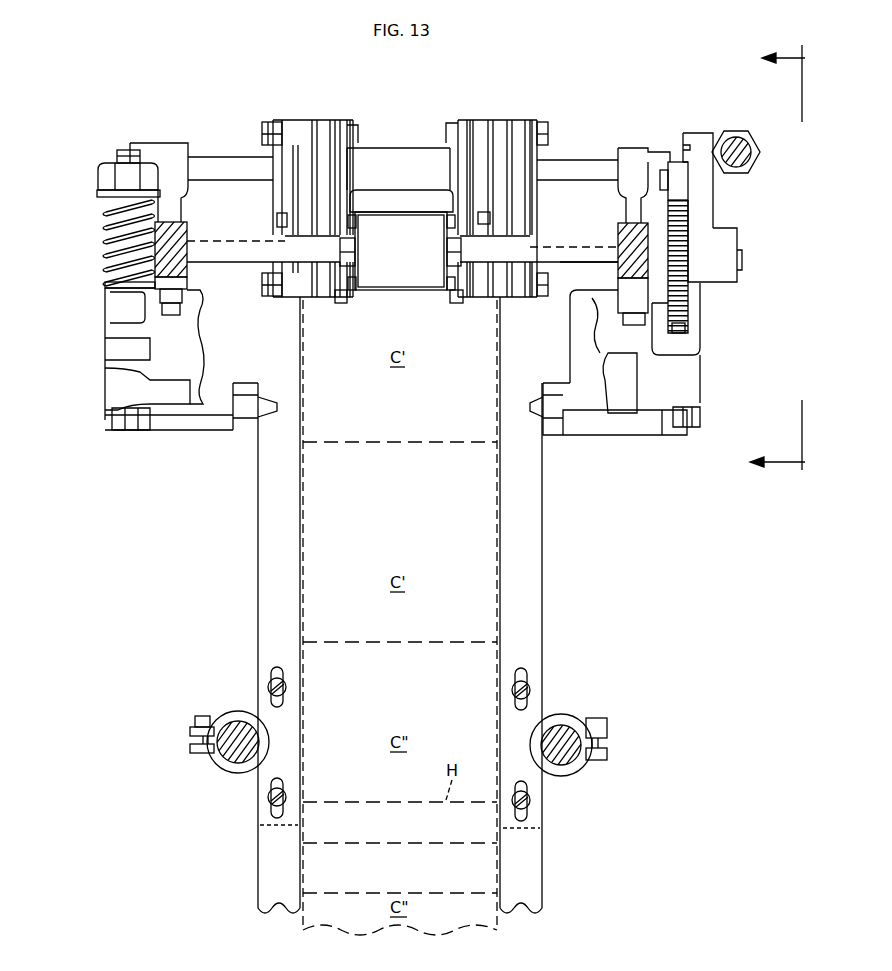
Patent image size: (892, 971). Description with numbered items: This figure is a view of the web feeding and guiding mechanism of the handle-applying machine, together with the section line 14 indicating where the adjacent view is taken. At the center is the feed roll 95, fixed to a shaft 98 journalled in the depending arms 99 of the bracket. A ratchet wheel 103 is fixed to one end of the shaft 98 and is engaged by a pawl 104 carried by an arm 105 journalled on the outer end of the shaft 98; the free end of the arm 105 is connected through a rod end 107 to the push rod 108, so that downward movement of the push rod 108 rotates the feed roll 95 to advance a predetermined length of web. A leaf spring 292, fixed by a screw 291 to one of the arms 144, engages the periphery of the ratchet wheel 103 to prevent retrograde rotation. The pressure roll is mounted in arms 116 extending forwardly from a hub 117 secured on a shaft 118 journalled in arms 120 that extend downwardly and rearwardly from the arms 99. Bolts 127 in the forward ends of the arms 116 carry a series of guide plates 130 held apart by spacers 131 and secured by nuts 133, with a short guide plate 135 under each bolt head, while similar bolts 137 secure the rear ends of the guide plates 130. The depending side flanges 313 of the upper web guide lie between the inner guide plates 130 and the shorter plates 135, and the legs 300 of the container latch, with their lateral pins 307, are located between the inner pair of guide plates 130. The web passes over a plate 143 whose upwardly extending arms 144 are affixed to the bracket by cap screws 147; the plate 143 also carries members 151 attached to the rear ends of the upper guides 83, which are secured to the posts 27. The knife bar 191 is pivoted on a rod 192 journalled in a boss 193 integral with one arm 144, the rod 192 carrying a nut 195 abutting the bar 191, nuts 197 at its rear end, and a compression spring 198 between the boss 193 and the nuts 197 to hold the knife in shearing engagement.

The section line 14- 14 is at (763, 258).
The posts 27 is at (225, 756).
The upper guides 83 is at (268, 548).
The feed roll 95 is at (412, 277).
The shaft 98 is at (549, 240).
The depending arms 99 is at (181, 263).
The ratchet wheel 103 is at (668, 252).
The pawl 104 is at (690, 190).
The arm 105 is at (710, 183).
The rod end 107 is at (722, 133).
The push rod 108 is at (731, 141).
The arms 116 is at (337, 303).
The hub 117 is at (405, 180).
The shaft 118 is at (545, 165).
The arms 120 is at (182, 160).
The bolts 127 is at (262, 286).
The guide plates 130 is at (325, 125).
The spacers 131 is at (490, 125).
The nuts 133 is at (541, 133).
The short guide plate 135 is at (447, 221).
The bolts 137 is at (352, 128).
The plate 143 is at (187, 357).
The arms 144 is at (115, 333).
The cap screws 147 is at (170, 316).
The members 151 is at (200, 421).
The knife bar 191 is at (110, 386).
The rod 192 is at (122, 150).
The boss 193 is at (105, 300).
The nut 195 is at (110, 413).
The nuts 197 is at (105, 172).
The compression spring 198 is at (110, 239).
The screw 291 is at (690, 323).
The leaf spring 292 is at (690, 297).
The legs 300 is at (402, 249).
The pins 307 is at (505, 216).
The depending side flanges 313 is at (453, 253).